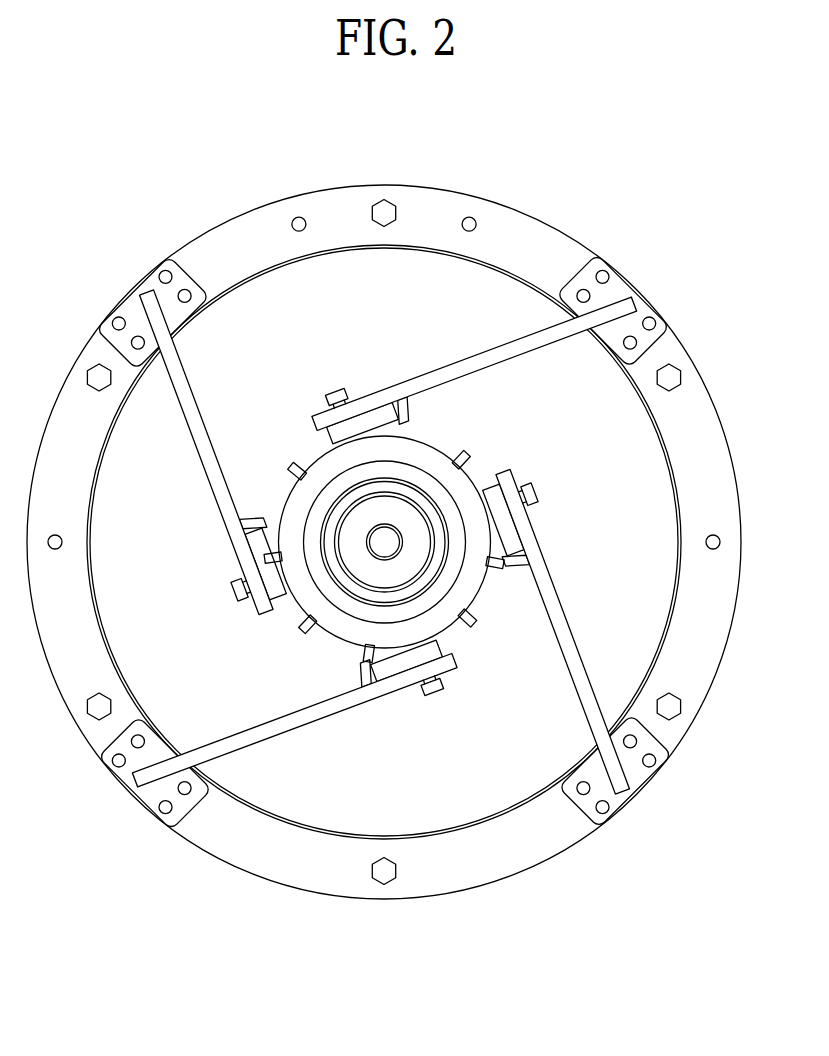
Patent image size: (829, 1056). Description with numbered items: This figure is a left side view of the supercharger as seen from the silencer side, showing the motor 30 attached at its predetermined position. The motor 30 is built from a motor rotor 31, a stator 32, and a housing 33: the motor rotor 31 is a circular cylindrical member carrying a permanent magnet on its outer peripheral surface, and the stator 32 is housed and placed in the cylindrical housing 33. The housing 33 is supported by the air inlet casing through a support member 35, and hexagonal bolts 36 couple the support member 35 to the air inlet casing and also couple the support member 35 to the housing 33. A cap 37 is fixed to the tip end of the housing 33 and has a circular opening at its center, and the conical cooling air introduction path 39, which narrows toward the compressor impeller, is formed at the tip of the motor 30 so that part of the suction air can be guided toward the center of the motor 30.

The motor 30 is at (384, 542).
The motor rotor 31 is at (400, 513).
The stator 32 is at (430, 512).
The housing 33 is at (310, 457).
The support member 35 is at (556, 590).
The hexagonal bolts 36 is at (667, 370).
The cap 37 is at (343, 627).
The cooling air introduction path 39 is at (406, 612).